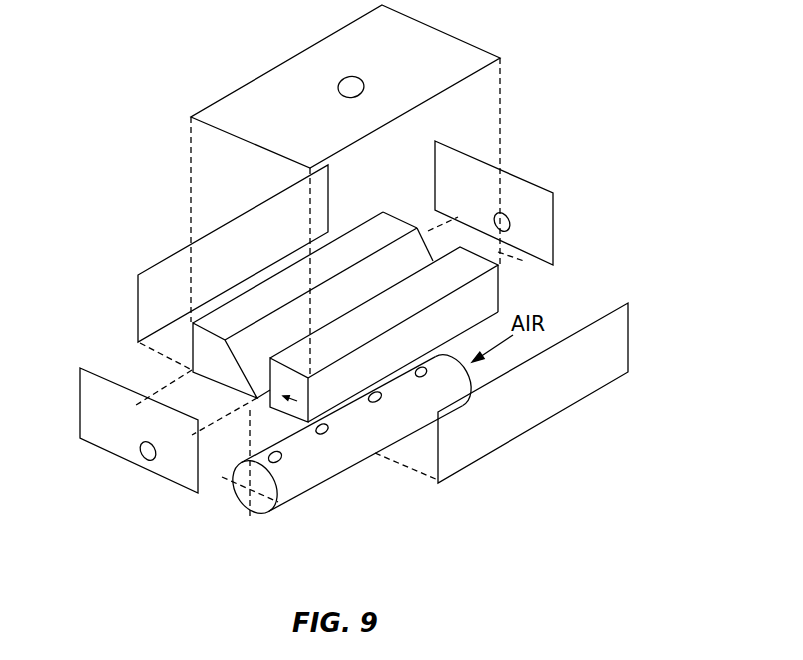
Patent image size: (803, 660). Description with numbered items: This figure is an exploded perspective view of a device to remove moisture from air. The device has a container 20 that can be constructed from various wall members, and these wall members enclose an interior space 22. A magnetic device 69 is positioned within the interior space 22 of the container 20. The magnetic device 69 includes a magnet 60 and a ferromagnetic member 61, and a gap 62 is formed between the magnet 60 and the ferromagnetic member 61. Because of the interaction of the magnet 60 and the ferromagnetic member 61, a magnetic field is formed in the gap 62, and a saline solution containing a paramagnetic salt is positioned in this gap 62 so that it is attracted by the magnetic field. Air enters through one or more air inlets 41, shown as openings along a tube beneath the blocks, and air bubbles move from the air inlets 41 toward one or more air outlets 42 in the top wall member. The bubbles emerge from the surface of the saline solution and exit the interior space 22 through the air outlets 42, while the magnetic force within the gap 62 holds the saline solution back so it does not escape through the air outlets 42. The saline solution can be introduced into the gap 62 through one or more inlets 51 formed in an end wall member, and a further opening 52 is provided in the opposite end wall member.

The container 20 is at (560, 84).
The interior space 22 is at (575, 295).
The air inlets 41 is at (419, 377).
The air outlets 42 is at (338, 85).
The inlets 51 is at (512, 224).
The front end plate 52 is at (141, 455).
The magnet 60 is at (416, 358).
The ferromagnetic member 61 is at (350, 305).
The gap 62 is at (447, 239).
The magnetic device 69 is at (178, 350).